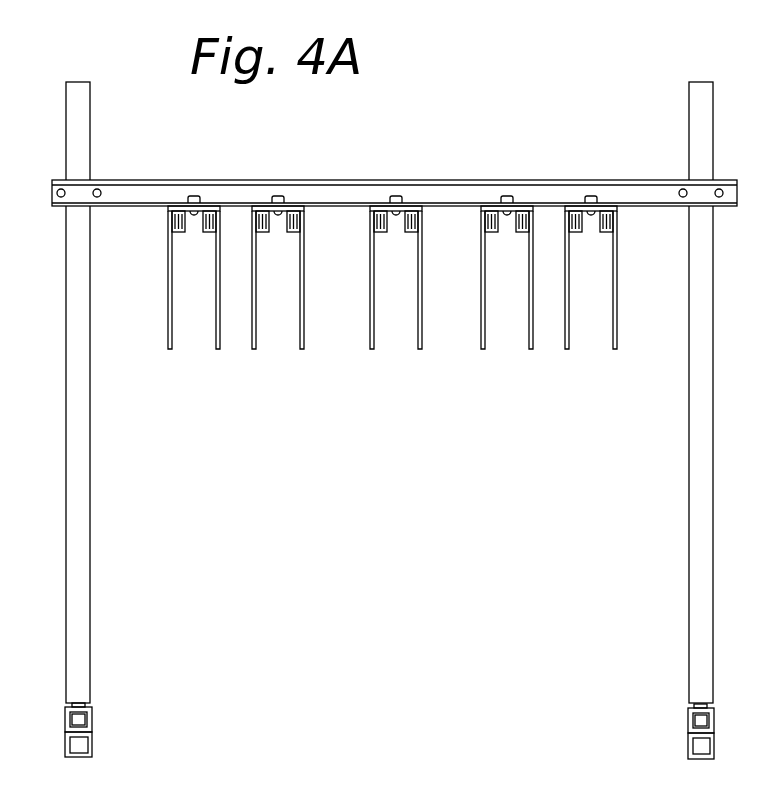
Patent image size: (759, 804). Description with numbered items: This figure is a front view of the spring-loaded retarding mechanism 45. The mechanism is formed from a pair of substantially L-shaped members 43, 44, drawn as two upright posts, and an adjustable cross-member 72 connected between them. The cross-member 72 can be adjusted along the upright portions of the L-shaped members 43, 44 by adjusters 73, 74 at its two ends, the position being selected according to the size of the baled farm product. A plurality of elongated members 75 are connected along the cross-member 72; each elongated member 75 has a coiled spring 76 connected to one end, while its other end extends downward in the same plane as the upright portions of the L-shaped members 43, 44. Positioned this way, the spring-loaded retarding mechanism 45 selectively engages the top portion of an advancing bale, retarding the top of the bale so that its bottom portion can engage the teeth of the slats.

The substantially L-shaped member 43 is at (713, 88).
The substantially L-shaped member 44 is at (89, 87).
The spring-loaded retarding mechanism 45 is at (398, 258).
The adjustable cross-member 72 is at (398, 167).
The adjuster 73 is at (722, 180).
The adjuster 74 is at (58, 178).
The elongated member 75 is at (643, 352).
The coiled spring 76 is at (568, 232).